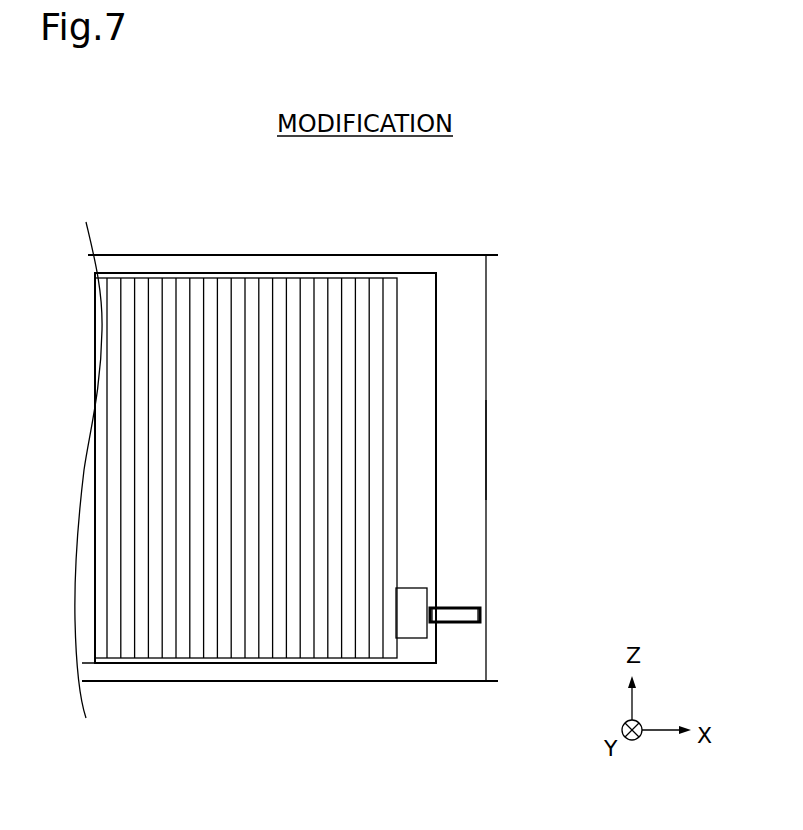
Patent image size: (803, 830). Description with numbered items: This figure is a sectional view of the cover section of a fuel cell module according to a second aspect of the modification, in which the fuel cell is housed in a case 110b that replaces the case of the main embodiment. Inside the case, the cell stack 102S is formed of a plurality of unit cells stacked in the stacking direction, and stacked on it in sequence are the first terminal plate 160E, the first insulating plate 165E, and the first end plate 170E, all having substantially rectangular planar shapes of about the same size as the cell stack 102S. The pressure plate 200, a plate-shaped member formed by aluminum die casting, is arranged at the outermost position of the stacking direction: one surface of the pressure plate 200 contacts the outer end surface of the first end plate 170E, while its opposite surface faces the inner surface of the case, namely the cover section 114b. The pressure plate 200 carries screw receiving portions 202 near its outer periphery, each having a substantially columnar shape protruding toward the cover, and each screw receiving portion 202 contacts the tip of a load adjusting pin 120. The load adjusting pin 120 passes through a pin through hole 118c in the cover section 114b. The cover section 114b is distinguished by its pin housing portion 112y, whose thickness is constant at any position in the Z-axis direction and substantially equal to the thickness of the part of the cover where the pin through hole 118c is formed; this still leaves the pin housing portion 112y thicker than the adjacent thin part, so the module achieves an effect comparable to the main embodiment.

The case 110b is at (123, 254).
The cover section 114b is at (486, 358).
The pin housing portion 112y is at (470, 443).
The cell stack 102S is at (217, 665).
The pressure plate 200 is at (387, 274).
The first terminal plate 160E is at (328, 278).
The first insulating plate 165E is at (342, 278).
The first end plate 170E is at (361, 278).
The screw receiving portion 202 is at (413, 587).
The load adjusting pin 120 is at (470, 607).
The pin through hole 118c is at (470, 625).